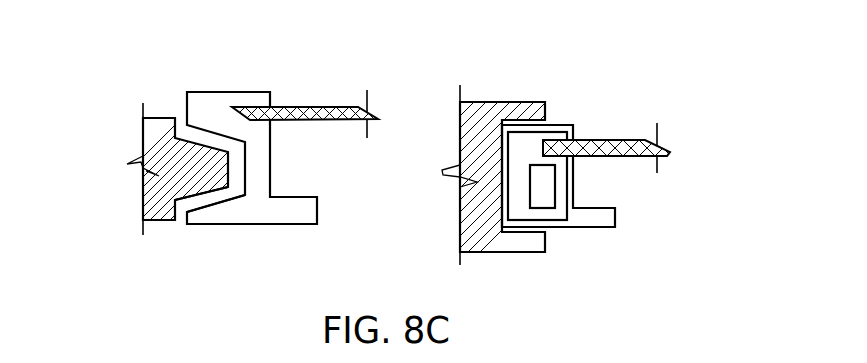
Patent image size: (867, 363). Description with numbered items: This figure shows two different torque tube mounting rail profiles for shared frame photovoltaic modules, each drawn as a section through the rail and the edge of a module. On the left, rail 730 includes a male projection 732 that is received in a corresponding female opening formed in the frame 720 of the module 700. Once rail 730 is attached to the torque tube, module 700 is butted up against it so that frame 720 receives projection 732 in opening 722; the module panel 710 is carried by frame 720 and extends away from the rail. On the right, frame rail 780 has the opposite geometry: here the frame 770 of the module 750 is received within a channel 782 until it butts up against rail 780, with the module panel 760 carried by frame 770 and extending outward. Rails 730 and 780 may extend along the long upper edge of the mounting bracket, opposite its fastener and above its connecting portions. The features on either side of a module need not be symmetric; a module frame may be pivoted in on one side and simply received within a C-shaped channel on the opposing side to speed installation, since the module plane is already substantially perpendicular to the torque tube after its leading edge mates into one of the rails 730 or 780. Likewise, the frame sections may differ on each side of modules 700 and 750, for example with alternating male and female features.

The module 700 is at (330, 89).
The panel 710 is at (335, 122).
The frame 720 is at (235, 93).
The opening 722 is at (232, 190).
The rail 730 is at (142, 198).
The male projection 732 is at (193, 180).
The module 750 is at (648, 98).
The panel 760 is at (628, 160).
The frame 770 is at (563, 125).
The frame rail 780 is at (492, 102).
The channel 782 is at (508, 214).